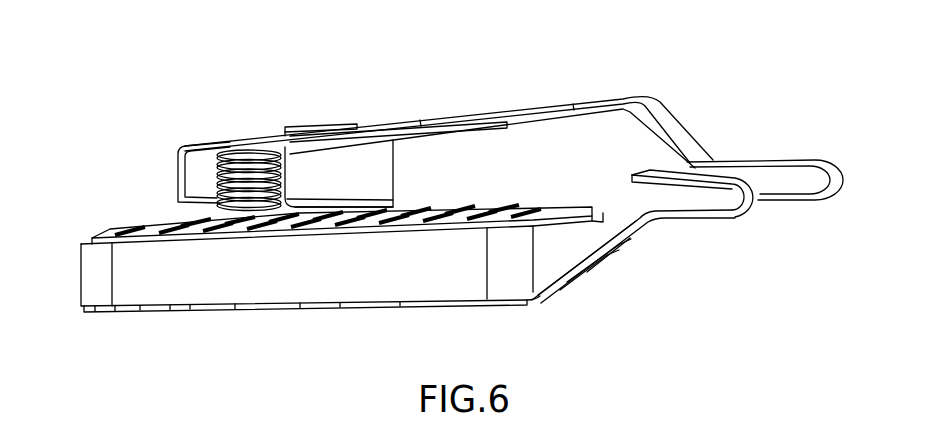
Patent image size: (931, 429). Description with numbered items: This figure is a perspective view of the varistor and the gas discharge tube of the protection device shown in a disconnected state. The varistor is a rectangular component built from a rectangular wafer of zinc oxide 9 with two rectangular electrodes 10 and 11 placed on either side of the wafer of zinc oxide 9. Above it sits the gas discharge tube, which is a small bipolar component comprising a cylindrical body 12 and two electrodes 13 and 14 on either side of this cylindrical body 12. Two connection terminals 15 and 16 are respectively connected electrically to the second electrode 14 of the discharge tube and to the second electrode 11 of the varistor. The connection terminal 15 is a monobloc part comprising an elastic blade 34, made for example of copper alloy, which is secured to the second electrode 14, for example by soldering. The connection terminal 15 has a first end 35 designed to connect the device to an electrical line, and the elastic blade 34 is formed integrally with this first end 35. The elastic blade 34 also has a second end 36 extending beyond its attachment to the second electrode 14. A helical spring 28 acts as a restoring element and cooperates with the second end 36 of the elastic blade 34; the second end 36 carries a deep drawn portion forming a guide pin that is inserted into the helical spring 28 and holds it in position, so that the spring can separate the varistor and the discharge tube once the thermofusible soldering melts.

The wafer of zinc oxide 9 is at (86, 285).
The electrode 10 is at (113, 230).
The electrode 11 is at (172, 311).
The cylindrical body 12 is at (363, 165).
The electrode 13 is at (383, 208).
The electrode 14 is at (320, 130).
The connection terminal 15 is at (738, 160).
The connection terminal 16 is at (650, 221).
The helical spring 28 is at (175, 209).
The elastic blade 34 is at (519, 100).
The first end 35 is at (788, 168).
The second end 36 is at (242, 147).